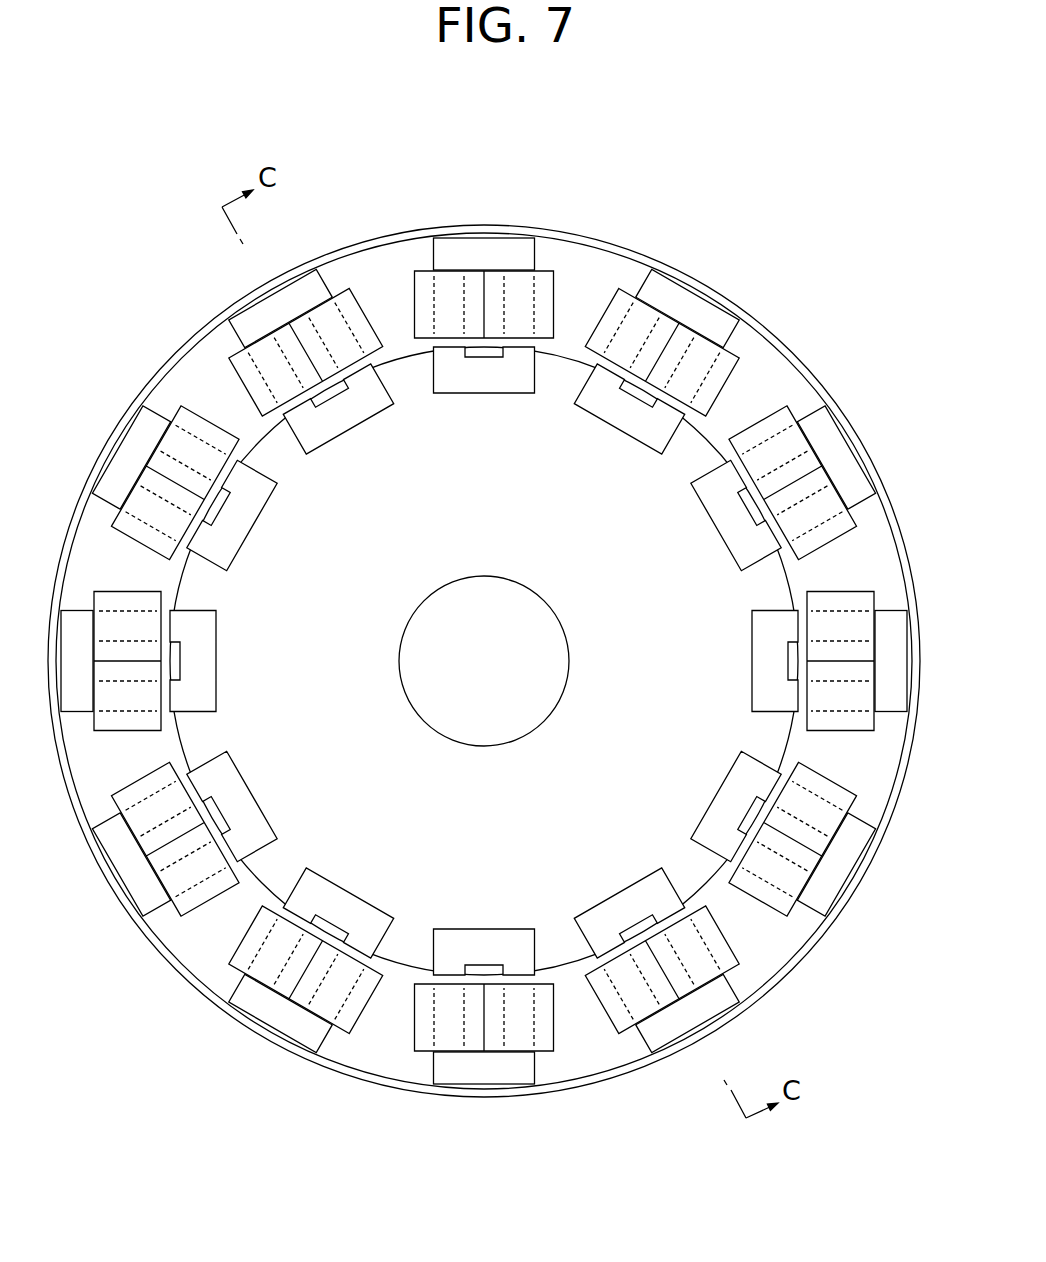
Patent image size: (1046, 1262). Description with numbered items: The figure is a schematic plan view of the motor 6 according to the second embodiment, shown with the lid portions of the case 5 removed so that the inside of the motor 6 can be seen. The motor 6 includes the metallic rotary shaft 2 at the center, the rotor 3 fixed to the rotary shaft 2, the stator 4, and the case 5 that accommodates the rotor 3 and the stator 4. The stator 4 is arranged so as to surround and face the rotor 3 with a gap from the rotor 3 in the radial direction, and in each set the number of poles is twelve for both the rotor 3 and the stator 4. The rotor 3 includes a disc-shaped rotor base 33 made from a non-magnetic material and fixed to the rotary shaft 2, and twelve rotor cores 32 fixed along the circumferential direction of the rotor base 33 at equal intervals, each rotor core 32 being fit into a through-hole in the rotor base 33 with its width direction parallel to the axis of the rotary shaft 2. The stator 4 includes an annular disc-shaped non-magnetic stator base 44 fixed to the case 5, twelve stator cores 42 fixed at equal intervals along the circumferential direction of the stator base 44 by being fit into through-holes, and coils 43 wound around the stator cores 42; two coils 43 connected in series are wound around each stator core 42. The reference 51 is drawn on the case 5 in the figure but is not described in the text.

The rotary shaft 2 is at (497, 720).
The rotor 3 is at (798, 574).
The rotor core 32 is at (490, 372).
The rotor base 33 is at (312, 507).
The stator 4 is at (772, 344).
The stator core 42 is at (488, 255).
The coil 43 is at (415, 293).
The stator base 44 is at (368, 277).
The case 5 is at (817, 355).
The cylindrical portion of housing 51 is at (357, 1082).
The motor 6 is at (711, 213).